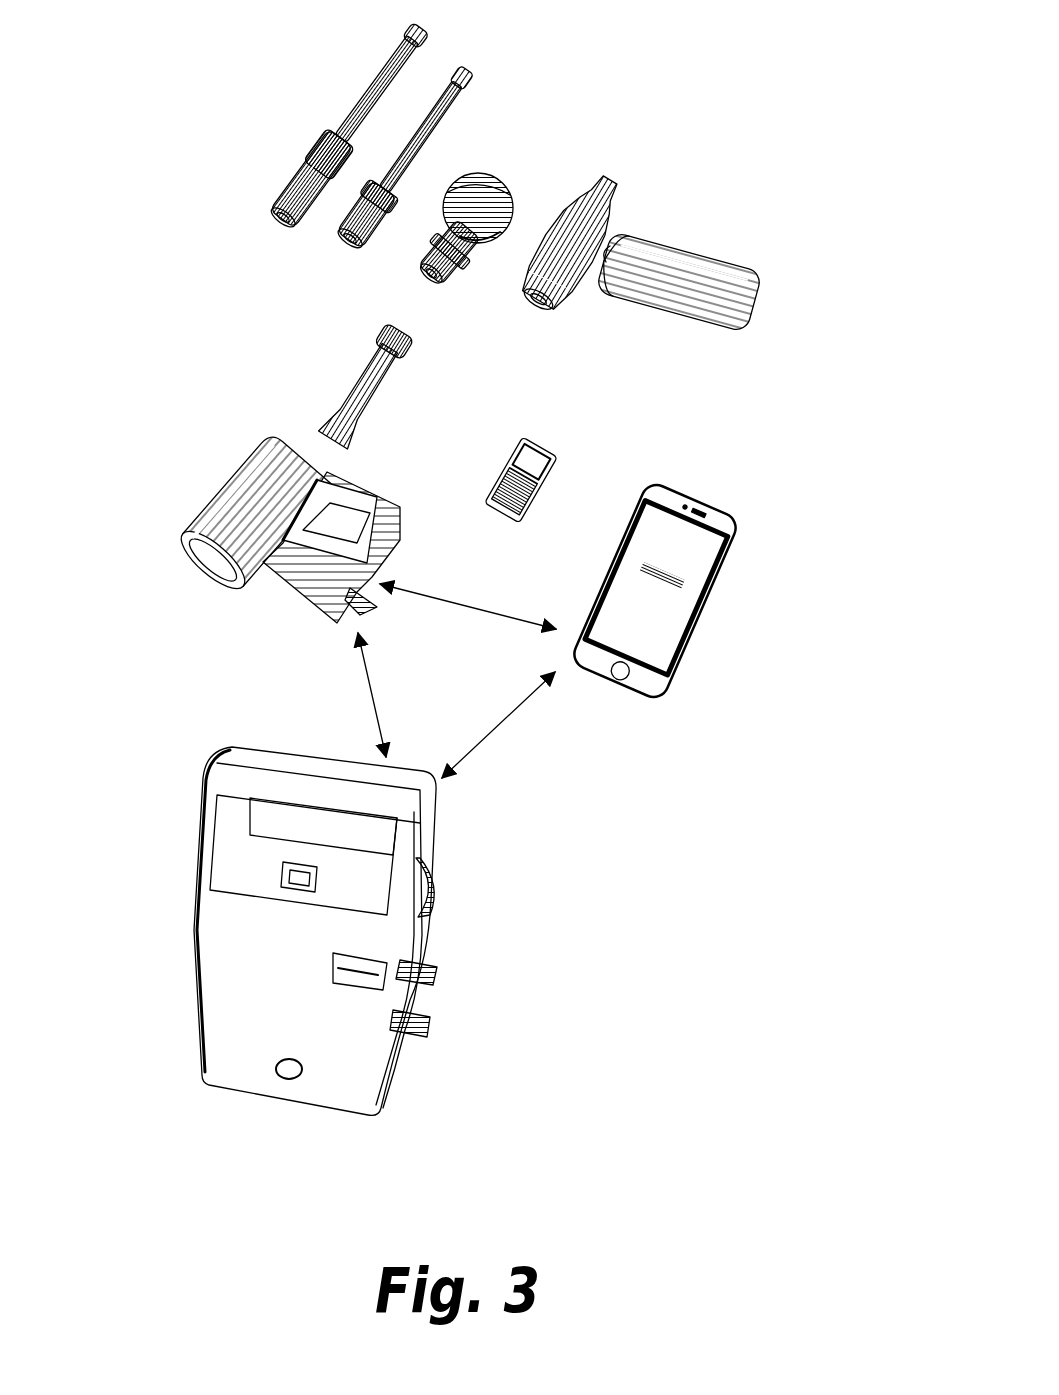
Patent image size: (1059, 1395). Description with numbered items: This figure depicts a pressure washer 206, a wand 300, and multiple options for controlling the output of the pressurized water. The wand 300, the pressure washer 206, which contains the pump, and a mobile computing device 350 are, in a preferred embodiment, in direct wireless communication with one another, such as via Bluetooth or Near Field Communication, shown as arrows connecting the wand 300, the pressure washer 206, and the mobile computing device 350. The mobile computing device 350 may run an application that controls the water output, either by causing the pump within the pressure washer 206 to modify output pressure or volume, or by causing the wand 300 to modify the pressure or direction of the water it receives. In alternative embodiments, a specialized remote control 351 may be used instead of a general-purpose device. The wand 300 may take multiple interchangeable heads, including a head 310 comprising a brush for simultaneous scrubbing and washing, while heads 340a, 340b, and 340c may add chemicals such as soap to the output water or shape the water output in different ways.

The head 340b is at (299, 125).
The head 340c is at (332, 196).
The head 310 is at (521, 184).
The head 340a is at (671, 239).
The wand 300 is at (231, 472).
The remote control 351 is at (574, 451).
The mobile computing device 350 is at (725, 560).
The pressure washer 206 is at (396, 931).